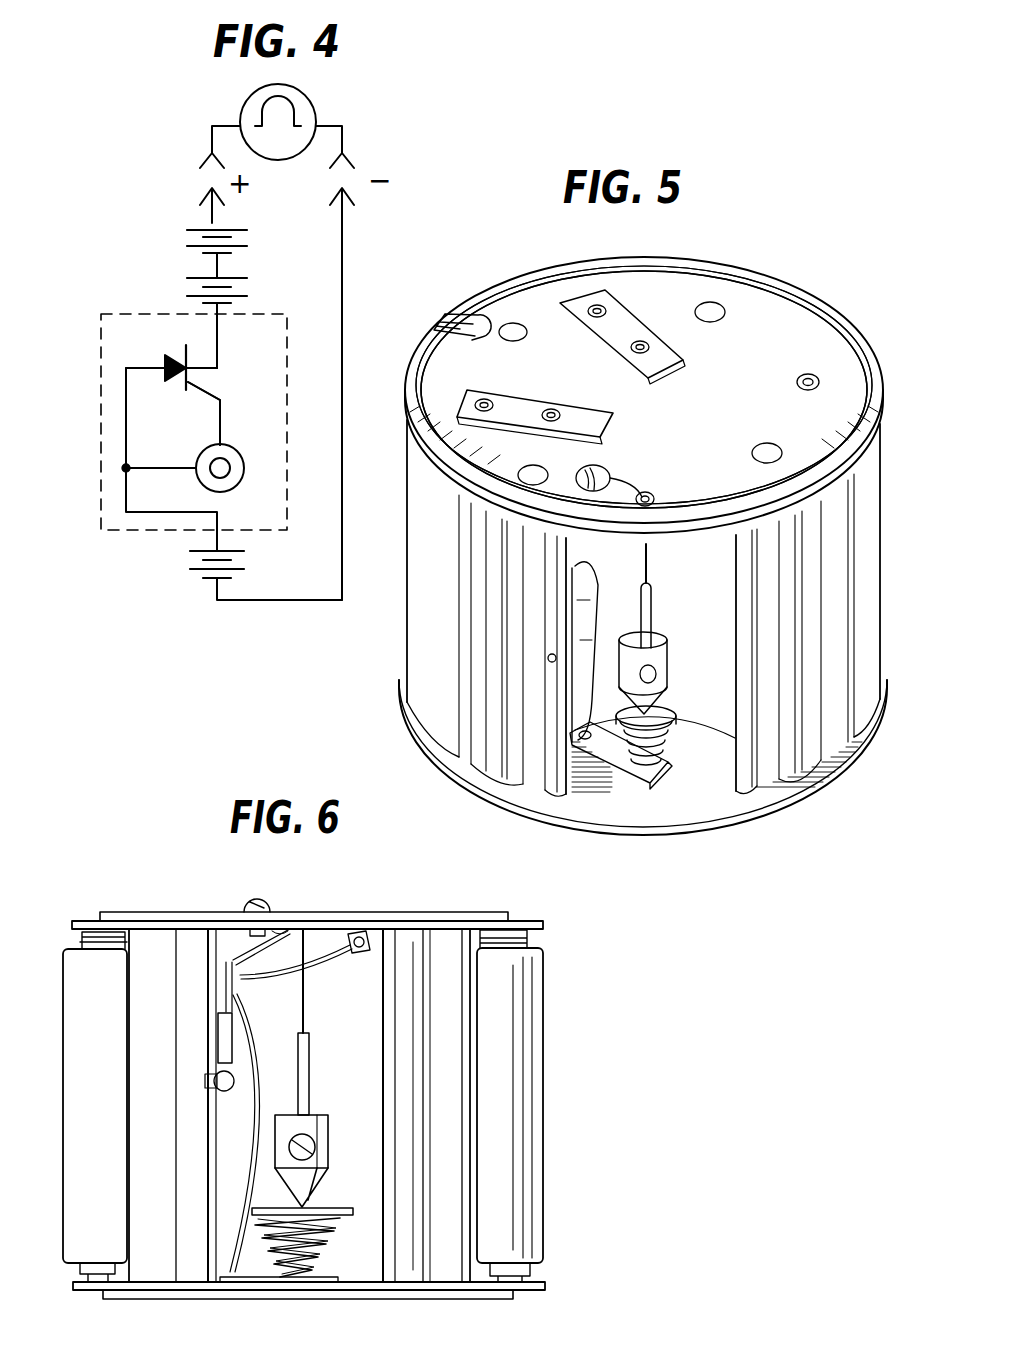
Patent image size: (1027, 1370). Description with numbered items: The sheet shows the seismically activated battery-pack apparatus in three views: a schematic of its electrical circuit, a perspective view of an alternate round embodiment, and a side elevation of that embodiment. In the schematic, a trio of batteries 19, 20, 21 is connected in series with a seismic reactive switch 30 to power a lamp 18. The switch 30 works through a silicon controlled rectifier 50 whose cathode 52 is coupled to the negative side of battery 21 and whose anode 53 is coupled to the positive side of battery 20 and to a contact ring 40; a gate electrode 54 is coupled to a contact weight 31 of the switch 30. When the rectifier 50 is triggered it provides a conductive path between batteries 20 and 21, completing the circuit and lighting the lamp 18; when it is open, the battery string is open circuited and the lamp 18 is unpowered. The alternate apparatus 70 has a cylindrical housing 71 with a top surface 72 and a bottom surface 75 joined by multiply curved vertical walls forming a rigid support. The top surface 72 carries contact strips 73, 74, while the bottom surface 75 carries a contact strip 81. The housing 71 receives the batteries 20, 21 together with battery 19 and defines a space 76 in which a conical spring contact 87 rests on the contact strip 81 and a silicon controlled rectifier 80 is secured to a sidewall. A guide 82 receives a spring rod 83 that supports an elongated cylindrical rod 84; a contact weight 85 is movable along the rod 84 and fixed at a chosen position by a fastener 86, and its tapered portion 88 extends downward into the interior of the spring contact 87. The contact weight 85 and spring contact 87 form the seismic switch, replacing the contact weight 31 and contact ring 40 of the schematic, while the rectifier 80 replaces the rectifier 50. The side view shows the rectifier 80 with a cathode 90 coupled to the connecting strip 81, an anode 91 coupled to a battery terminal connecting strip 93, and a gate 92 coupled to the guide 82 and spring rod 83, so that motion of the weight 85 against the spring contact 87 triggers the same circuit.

In FIG. 4, the lamp 18 is at (310, 106).
In FIG. 4, the battery 19 is at (185, 236).
In FIG. 4, the battery 20 is at (190, 563).
In FIG. 5, the battery 20 is at (415, 589).
In FIG. 6, the battery 20 is at (91, 985).
In FIG. 4, the battery 21 is at (256, 288).
In FIG. 5, the battery 21 is at (879, 443).
In FIG. 6, the battery 21 is at (523, 1070).
In FIG. 4, the seismic reactive switch 30 is at (101, 495).
In FIG. 4, the contact weight 31 is at (226, 452).
In FIG. 4, the contact ring 40 is at (233, 466).
In FIG. 4, the silicon controlled rectifier 50 is at (187, 361).
In FIG. 4, the cathode 52 is at (200, 373).
In FIG. 4, the anode 53 is at (170, 358).
In FIG. 4, the gate electrode 54 is at (215, 405).
In FIG. 5, the seismically activated apparatus 70 is at (800, 243).
In FIG. 6, the seismically activated apparatus 70 is at (116, 870).
In FIG. 5, the housing 71 is at (842, 274).
In FIG. 6, the housing 71 is at (122, 1043).
In FIG. 5, the top surface 72 is at (806, 356).
In FIG. 6, the top surface 72 is at (145, 918).
In FIG. 5, the contact strip 73 is at (660, 357).
In FIG. 5, the contact strip 74 is at (575, 417).
In FIG. 5, the bottom surface 75 is at (431, 733).
In FIG. 6, the bottom surface 75 is at (146, 1288).
In FIG. 5, the space 76 is at (692, 797).
In FIG. 6, the space 76 is at (396, 1034).
In FIG. 5, the silicon controlled rectifier 80 is at (578, 622).
In FIG. 6, the silicon controlled rectifier 80 is at (226, 1038).
In FIG. 5, the contact strip 81 is at (617, 758).
In FIG. 5, the guide 82 is at (650, 495).
In FIG. 5, the spring rod 83 is at (651, 567).
In FIG. 6, the spring rod 83 is at (301, 1010).
In FIG. 5, the cylindrical rod 84 is at (654, 622).
In FIG. 6, the cylindrical rod 84 is at (312, 1092).
In FIG. 5, the contact weight 85 is at (668, 654).
In FIG. 6, the contact weight 85 is at (289, 1122).
In FIG. 5, the fastener 86 is at (668, 672).
In FIG. 6, the fastener 86 is at (316, 1144).
In FIG. 5, the conical spring contact 87 is at (670, 722).
In FIG. 6, the conical spring contact 87 is at (334, 1209).
In FIG. 5, the tapered portion 88 is at (668, 700).
In FIG. 6, the tapered portion 88 is at (322, 1184).
In FIG. 6, the cathode 90 is at (224, 1011).
In FIG. 6, the anode 91 is at (220, 990).
In FIG. 6, the gate 92 is at (227, 944).
In FIG. 6, the battery terminal connecting strip 93 is at (359, 958).